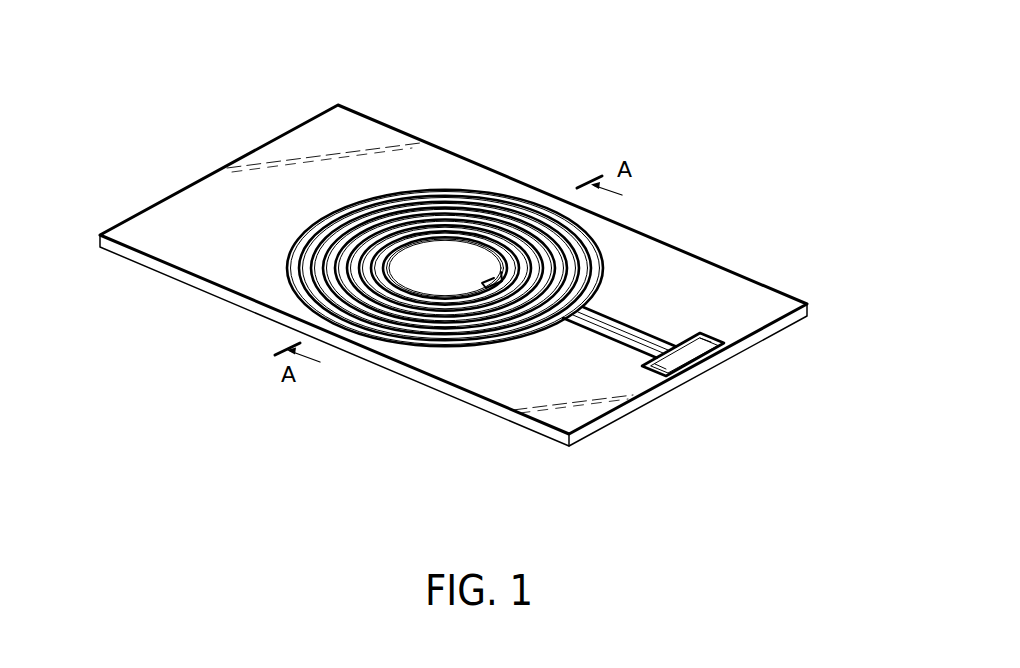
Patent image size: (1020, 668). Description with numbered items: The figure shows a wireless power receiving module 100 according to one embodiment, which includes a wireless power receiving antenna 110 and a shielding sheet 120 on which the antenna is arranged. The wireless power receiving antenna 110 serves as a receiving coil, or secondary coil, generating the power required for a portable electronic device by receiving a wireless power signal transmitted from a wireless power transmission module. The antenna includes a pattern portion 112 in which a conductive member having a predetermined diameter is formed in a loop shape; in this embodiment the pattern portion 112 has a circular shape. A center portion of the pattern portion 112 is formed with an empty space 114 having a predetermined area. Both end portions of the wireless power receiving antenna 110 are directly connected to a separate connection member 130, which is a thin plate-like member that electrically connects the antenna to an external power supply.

The wireless power receiving module 100 is at (473, 63).
The wireless power receiving antenna 110 is at (517, 197).
The pattern portion 112 is at (458, 197).
The empty space 114 is at (452, 269).
The shielding sheet 120 is at (745, 275).
The connection member 130 is at (632, 320).